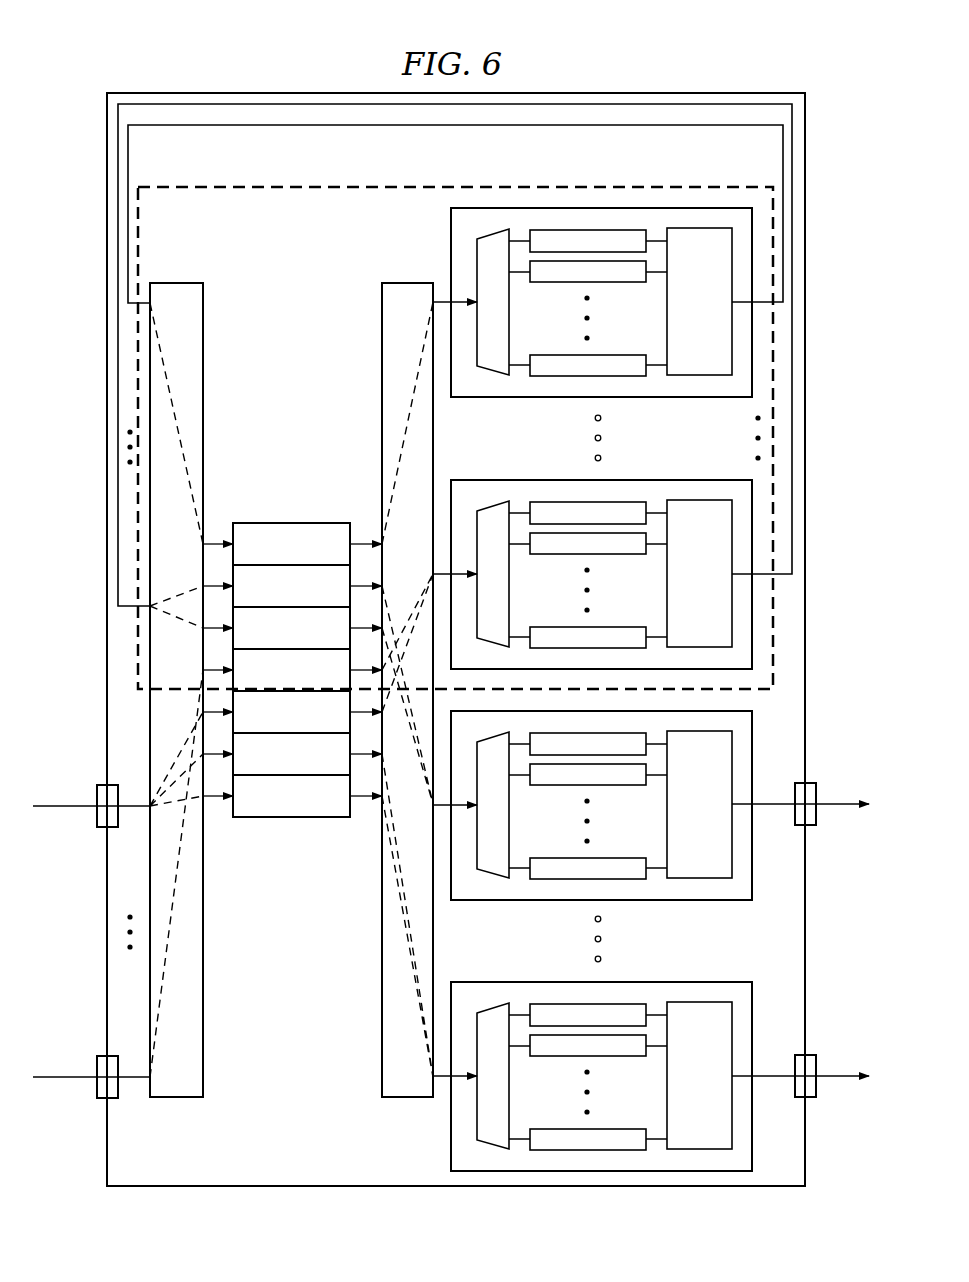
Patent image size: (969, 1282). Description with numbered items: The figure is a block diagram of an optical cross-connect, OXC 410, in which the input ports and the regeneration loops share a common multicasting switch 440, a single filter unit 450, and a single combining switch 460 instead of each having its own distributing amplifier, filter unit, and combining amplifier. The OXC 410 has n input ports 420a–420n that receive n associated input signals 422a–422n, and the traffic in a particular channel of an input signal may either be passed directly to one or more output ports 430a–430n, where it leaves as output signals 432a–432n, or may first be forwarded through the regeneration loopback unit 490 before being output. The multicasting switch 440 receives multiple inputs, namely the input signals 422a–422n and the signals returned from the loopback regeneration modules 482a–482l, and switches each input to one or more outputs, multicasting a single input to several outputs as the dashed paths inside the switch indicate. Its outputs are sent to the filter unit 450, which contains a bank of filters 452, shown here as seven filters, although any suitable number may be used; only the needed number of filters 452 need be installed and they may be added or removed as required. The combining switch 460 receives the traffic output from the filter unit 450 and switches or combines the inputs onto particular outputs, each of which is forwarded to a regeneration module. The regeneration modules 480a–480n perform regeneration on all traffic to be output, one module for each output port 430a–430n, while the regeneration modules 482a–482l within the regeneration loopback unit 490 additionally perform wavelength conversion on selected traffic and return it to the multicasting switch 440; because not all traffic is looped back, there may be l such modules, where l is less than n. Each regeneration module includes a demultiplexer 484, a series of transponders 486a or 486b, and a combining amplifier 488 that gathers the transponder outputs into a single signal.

The optical cross-connect (OXC) 410 is at (243, 91).
The regeneration loopback unit 490 is at (273, 185).
The multicasting switch 440 is at (166, 283).
The combining switch 460 is at (400, 283).
The filter unit 450 is at (262, 521).
The filter 452 is at (351, 528).
The regeneration module 482a is at (592, 331).
The regeneration module 482l is at (592, 545).
The regeneration module 480a is at (592, 834).
The regeneration module 480n is at (592, 1047).
The demultiplexer 484 is at (509, 321).
The transponder 486a is at (595, 806).
The transponder 486b is at (618, 355).
The combining amplifier 488 is at (716, 316).
The input port 420a is at (97, 817).
The input port 420n is at (97, 1088).
The input signal 422a is at (97, 803).
The input signal 422n is at (97, 1074).
The output port 430a is at (816, 813).
The output port 430n is at (816, 1085).
The output signal 432a is at (835, 801).
The output signal 432n is at (835, 1073).